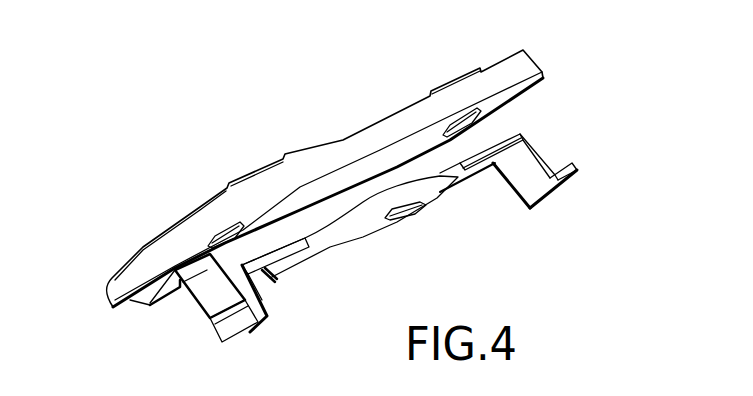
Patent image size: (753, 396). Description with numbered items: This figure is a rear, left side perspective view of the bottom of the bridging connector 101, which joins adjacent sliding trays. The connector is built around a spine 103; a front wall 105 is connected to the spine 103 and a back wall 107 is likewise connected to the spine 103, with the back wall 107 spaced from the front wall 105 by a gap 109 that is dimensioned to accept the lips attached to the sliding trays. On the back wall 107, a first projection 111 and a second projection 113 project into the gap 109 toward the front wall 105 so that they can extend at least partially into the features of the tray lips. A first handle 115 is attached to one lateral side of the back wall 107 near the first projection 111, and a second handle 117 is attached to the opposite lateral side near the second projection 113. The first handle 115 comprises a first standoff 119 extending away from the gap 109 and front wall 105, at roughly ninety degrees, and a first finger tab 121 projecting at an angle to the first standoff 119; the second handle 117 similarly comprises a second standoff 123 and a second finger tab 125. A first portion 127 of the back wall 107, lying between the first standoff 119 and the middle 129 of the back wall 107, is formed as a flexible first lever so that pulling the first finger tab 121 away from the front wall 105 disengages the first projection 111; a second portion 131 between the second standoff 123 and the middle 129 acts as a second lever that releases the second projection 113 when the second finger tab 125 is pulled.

The bridging connector 101 is at (160, 163).
The spine 103 is at (163, 288).
The front wall 105 is at (343, 140).
The back wall 107 is at (384, 223).
The gap 109 is at (386, 158).
The first projection 111 is at (478, 124).
The second projection 113 is at (243, 238).
The first handle 115 is at (555, 212).
The second handle 117 is at (280, 350).
The first standoff 119 is at (540, 152).
The first finger tab 121 is at (568, 160).
The second standoff 123 is at (208, 305).
The second finger tab 125 is at (215, 332).
The first portion of the back wall 127 is at (480, 160).
The middle of the back wall 129 is at (366, 195).
The second portion of the back wall 131 is at (275, 283).